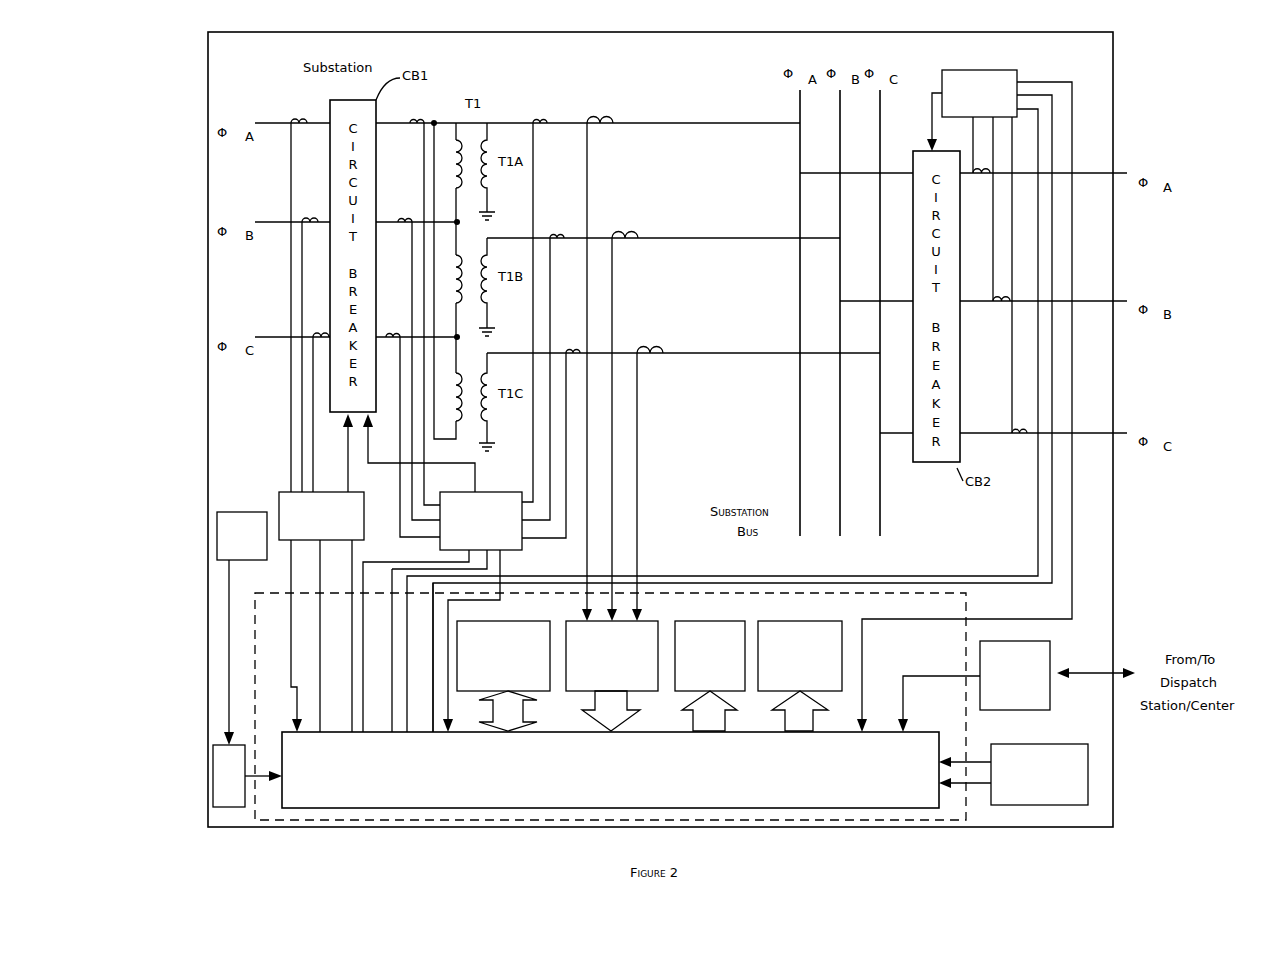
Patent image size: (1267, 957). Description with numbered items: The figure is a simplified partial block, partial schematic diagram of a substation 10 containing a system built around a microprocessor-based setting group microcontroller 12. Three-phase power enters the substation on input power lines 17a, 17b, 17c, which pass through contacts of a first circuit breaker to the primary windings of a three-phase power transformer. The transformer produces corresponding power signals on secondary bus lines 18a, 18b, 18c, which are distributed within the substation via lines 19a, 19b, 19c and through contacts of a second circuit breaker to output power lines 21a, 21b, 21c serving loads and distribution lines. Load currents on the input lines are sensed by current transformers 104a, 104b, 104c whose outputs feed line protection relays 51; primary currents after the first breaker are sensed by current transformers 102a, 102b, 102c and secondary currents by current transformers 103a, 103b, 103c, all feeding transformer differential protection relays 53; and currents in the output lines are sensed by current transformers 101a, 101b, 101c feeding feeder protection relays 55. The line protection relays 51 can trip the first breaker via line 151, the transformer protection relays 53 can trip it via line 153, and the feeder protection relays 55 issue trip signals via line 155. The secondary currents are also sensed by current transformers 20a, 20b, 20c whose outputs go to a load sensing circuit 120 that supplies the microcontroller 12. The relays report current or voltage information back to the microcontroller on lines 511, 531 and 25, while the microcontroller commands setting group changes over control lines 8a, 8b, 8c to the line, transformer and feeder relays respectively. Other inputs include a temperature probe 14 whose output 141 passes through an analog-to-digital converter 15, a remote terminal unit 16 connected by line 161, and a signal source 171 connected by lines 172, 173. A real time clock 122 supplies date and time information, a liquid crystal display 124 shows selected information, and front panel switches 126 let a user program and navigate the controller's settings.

The substation 10 is at (657, 30).
The microcontroller 12 is at (282, 798).
The temperature probe 14 is at (228, 511).
The output 141 is at (225, 670).
The analog-to-digital (A/D) converter 15 is at (212, 762).
The remote terminal unit (RTU) 16 is at (1050, 645).
The line(s) 161 is at (907, 674).
The input power line 17a is at (262, 122).
The input power line 17b is at (280, 221).
The input power line 17c is at (280, 336).
The secondary bus line 18a is at (660, 122).
The secondary bus line 18b is at (685, 237).
The secondary bus line 18c is at (713, 352).
The line 19a is at (803, 124).
The line 19b is at (843, 221).
The line 19c is at (882, 501).
The current transformer 20a is at (600, 122).
The current transformer 20b is at (619, 237).
The current transformer 20c is at (651, 352).
The output power line 21a is at (1085, 172).
The output power line 21b is at (1087, 300).
The output power line 21c is at (1085, 432).
The line 25 is at (1077, 531).
The line protection relays 51 is at (282, 491).
The line 511 is at (290, 587).
The transformer differential protection relays 53 is at (484, 491).
The line 531 is at (448, 692).
The feeder protection relays 55 is at (985, 70).
The control line 8a is at (352, 613).
The control line 8b is at (392, 649).
The control line 8c is at (433, 617).
The current transformer 101a is at (975, 148).
The current transformer 101b is at (996, 252).
The current transformer 101c is at (1013, 378).
The current transformer 102a is at (416, 122).
The current transformer 102b is at (399, 221).
The current transformer 102c is at (390, 336).
The current transformer 103a is at (538, 122).
The current transformer 103b is at (552, 237).
The current transformer 103c is at (574, 352).
The current transformer 104a is at (300, 122).
The current transformer 104b is at (310, 220).
The current transformer 104c is at (318, 335).
The load sensing circuit 120 is at (650, 620).
The real time clock 122 is at (513, 620).
The liquid crystal display (LCD) 124 is at (722, 620).
The front panel switches 126 is at (798, 620).
The line(s) 151 is at (348, 451).
The line(s) 153 is at (387, 466).
The line(s) 155 is at (930, 119).
The signal source 171 is at (1050, 743).
The line 172 is at (977, 761).
The line 173 is at (972, 787).